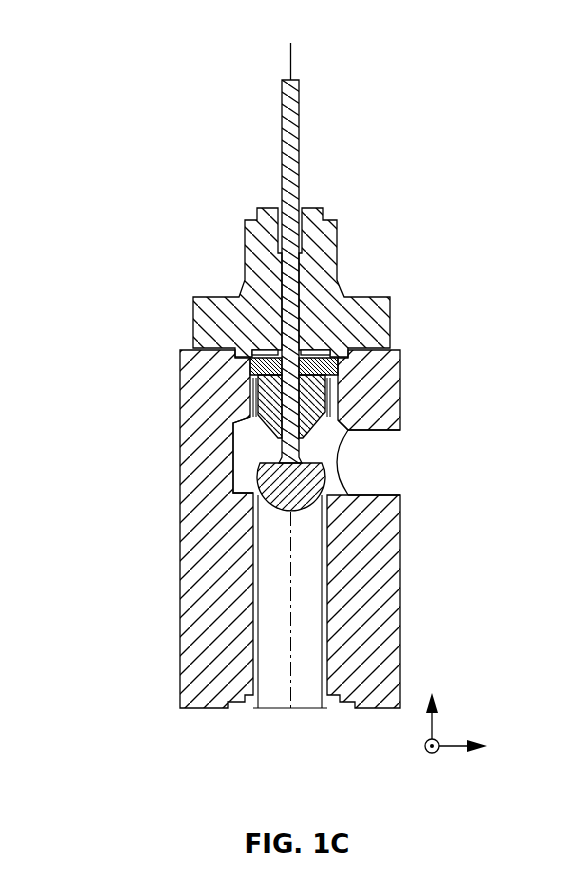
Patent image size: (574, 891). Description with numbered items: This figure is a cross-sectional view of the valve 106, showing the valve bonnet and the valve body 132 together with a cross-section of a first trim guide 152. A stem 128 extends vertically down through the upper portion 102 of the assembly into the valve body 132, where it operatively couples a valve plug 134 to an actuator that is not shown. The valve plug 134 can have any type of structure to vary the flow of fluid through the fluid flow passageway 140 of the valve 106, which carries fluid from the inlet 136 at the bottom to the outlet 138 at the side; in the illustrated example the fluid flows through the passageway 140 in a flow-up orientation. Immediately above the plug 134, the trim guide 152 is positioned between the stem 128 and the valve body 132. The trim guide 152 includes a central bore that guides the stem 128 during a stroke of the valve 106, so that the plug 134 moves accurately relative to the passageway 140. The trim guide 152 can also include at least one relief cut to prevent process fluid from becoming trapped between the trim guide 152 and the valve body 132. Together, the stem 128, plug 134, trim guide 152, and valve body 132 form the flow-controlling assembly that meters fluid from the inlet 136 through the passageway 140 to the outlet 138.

The valve 106 is at (153, 106).
The stem 128 is at (293, 79).
The upper housing 102 is at (358, 292).
The valve body 132 is at (395, 348).
The outlet 138 is at (388, 478).
The passageway 140 is at (248, 452).
The trim guide 152 is at (249, 378).
The valve plug 134 is at (283, 487).
The inlet 136 is at (283, 625).